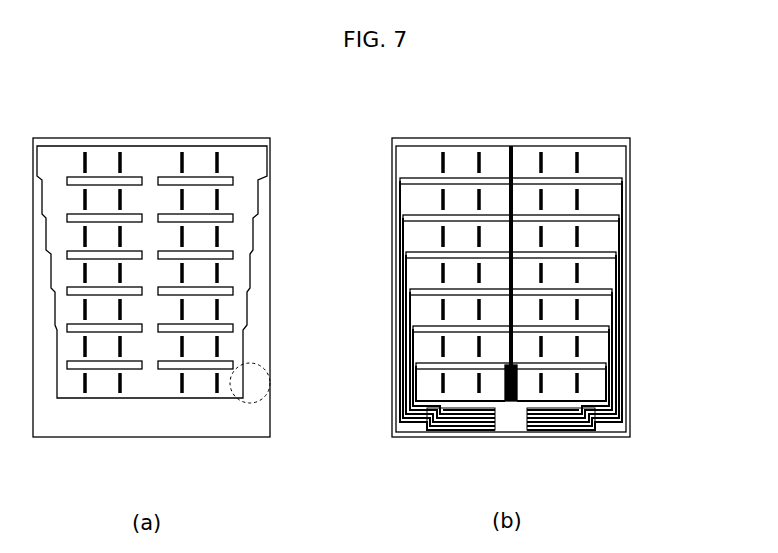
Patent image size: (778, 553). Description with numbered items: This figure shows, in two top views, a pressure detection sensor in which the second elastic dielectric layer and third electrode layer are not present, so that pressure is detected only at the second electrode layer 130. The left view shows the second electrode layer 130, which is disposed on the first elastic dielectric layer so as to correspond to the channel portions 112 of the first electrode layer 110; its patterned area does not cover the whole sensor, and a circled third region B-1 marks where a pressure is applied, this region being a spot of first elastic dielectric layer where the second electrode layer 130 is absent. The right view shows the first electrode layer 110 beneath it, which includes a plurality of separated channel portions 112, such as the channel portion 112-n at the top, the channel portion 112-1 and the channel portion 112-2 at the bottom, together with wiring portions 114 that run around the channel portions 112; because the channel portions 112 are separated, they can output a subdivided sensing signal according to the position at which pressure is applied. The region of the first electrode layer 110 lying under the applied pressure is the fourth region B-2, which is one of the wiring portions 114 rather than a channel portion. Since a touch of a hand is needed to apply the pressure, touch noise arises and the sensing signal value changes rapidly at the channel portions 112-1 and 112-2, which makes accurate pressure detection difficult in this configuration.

The second electrode layer 130 is at (247, 162).
The third region B-1 is at (271, 382).
The first electrode layer 110 is at (567, 296).
The channel portions 112 is at (625, 276).
The channel portion 112-n is at (600, 162).
The channel portion 112-1 is at (460, 387).
The channel portion 112-2 is at (563, 387).
The wiring portions 114 is at (625, 313).
The fourth region B-2 is at (628, 379).